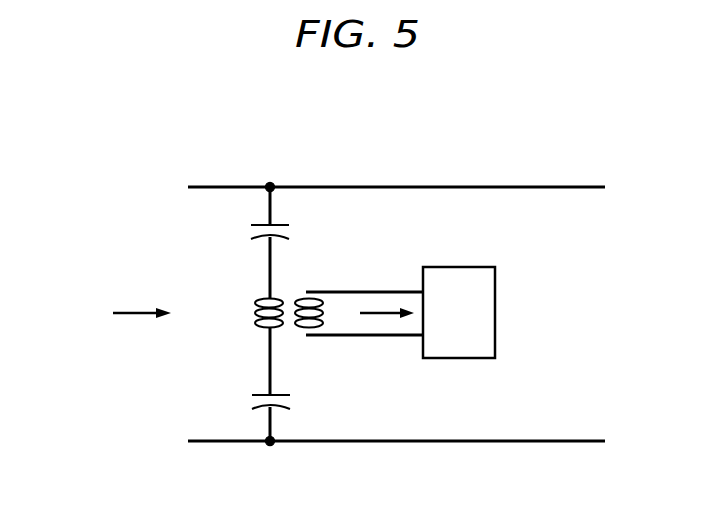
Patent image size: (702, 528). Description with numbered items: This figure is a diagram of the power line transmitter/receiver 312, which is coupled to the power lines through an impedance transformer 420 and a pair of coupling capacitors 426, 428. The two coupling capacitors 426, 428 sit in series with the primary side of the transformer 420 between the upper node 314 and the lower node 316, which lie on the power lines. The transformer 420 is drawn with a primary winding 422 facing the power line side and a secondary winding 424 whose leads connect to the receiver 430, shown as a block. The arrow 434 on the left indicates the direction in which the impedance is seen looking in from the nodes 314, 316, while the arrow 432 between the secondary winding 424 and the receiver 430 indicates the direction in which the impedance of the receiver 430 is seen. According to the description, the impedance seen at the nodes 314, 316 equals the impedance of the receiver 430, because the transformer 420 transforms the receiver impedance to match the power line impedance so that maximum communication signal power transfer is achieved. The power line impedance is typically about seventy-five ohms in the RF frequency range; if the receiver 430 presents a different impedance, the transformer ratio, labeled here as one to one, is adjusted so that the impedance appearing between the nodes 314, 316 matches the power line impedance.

The power line transmitter/receiver 312 is at (150, 403).
The node 314 is at (270, 184).
The node 316 is at (269, 444).
The impedance transformer 420 is at (295, 302).
The primary winding 422 is at (256, 315).
The secondary winding 424 is at (318, 296).
The coupling capacitor 426 is at (266, 231).
The coupling capacitor 428 is at (284, 397).
The receiver 430 is at (496, 305).
The arrow 432 is at (375, 311).
The arrow 434 is at (130, 312).